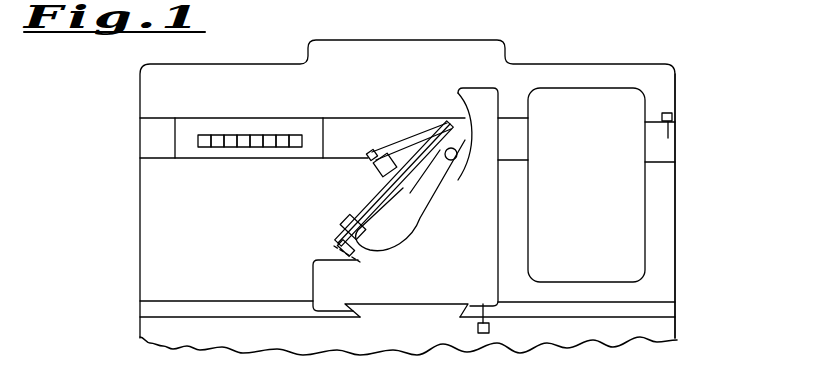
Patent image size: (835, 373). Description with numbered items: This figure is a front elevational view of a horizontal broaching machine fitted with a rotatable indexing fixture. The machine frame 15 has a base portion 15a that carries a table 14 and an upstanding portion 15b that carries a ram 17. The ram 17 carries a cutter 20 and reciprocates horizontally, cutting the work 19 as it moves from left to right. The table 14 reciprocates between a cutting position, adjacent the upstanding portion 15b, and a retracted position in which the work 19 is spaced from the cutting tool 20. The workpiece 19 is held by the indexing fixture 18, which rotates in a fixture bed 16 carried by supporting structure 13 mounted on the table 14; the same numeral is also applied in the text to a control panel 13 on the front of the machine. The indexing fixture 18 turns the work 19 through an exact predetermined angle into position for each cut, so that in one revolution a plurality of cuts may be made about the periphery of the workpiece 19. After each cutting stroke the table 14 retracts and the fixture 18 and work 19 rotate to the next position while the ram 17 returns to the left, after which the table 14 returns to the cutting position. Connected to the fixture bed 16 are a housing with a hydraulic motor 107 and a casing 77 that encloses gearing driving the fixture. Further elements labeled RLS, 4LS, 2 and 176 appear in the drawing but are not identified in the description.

The frame 15 is at (570, 65).
The base portion 15a is at (665, 328).
The upstanding portion 15b is at (675, 224).
The ram 17 is at (182, 140).
The cutter 20 is at (230, 134).
The table 14 is at (313, 293).
The supporting structure 13 is at (645, 193).
The right limit switch RLS is at (674, 118).
The limit switch 4LS is at (478, 331).
The stop surface 2 is at (465, 118).
The fixture bed 16 is at (428, 197).
The pivot pin 176 is at (454, 160).
The casing 77 is at (412, 243).
The hydraulic motor 107 is at (350, 218).
The workpiece 19 is at (344, 241).
The indexing fixture 18 is at (366, 153).